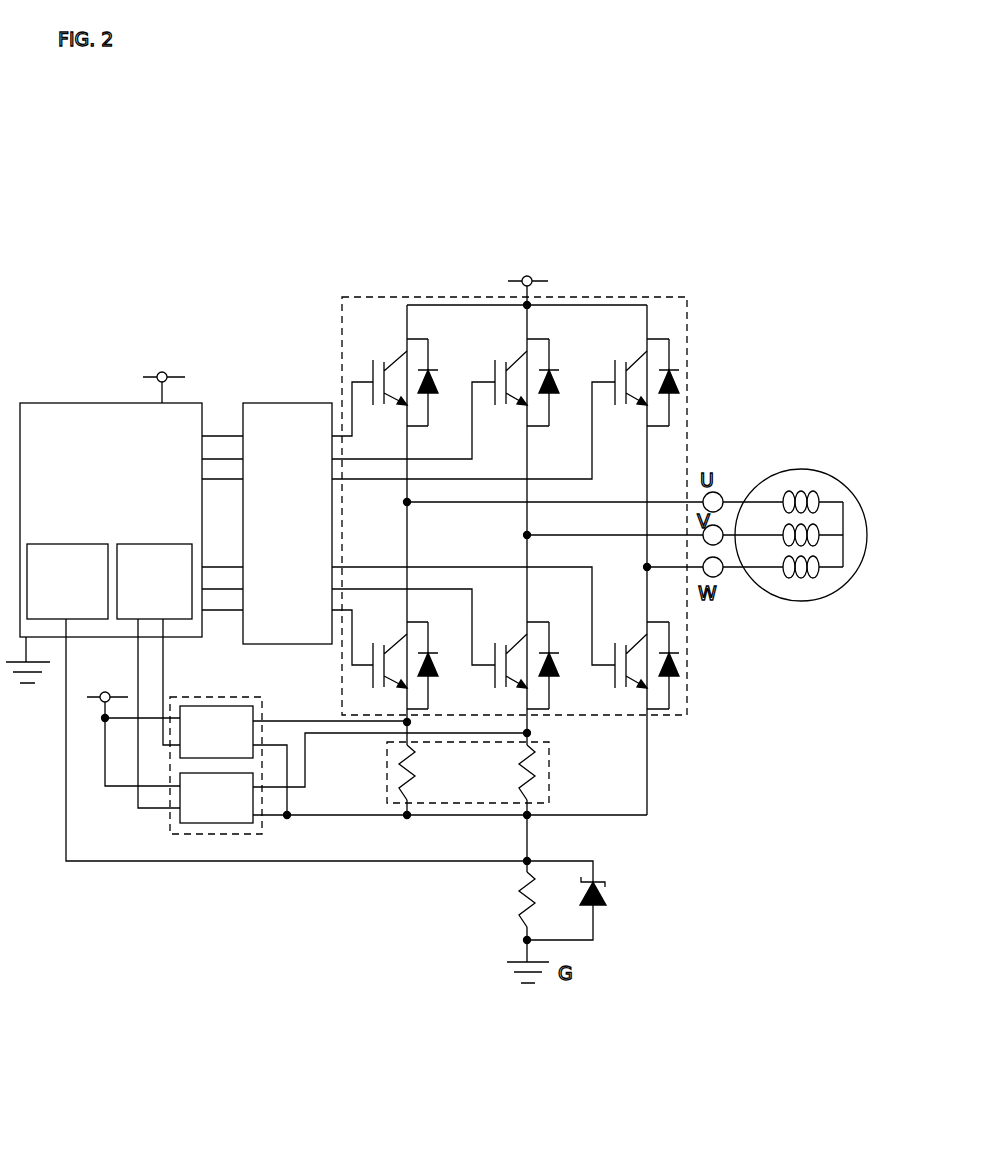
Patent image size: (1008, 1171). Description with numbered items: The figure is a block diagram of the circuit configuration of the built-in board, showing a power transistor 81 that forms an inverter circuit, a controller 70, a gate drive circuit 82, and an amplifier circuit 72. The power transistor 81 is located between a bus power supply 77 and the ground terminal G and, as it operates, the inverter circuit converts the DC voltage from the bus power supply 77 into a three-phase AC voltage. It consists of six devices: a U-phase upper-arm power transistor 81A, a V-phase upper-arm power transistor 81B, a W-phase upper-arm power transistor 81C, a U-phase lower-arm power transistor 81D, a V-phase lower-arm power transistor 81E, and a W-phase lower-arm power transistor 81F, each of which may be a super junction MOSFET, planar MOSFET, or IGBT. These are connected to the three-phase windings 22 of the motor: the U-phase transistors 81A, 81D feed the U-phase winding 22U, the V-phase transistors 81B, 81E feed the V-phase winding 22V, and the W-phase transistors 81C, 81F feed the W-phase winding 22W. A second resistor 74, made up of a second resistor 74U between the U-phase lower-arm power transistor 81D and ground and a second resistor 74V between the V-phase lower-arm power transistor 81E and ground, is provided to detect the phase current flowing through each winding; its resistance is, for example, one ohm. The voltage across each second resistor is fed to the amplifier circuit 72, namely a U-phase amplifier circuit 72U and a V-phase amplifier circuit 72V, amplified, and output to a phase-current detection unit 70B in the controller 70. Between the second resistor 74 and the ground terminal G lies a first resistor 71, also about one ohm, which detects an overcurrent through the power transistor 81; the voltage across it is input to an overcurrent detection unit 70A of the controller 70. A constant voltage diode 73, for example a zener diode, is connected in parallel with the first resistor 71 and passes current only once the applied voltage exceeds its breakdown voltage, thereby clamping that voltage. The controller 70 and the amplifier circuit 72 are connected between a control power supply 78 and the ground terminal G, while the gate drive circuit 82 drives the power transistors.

The controller 70 is at (104, 543).
The overcurrent detection unit 70A is at (67, 581).
The phase-current detection unit 70B is at (154, 581).
The gate drive circuit 82 is at (408, 523).
The power transistor 81 is at (674, 296).
The U-phase upper-arm power transistor 81A is at (400, 358).
The V-phase upper-arm power transistor 81B is at (520, 358).
The W-phase upper-arm power transistor 81C is at (640, 358).
The U-phase lower-arm power transistor 81D is at (434, 683).
The V-phase lower-arm power transistor 81E is at (562, 683).
The W-phase lower-arm power transistor 81F is at (676, 683).
The bus power supply 77 is at (537, 274).
The control power supply 78 is at (167, 369).
The amplifier circuit 72 is at (212, 696).
The U-phase amplifier circuit 72U is at (216, 732).
The V-phase amplifier circuit 72V is at (216, 798).
The second resistor 74 is at (385, 781).
The second resistor (U-phase) 74U is at (421, 767).
The second resistor (V-phase) 74V is at (541, 767).
The first resistor 71 is at (512, 905).
The constant voltage diode 73 is at (608, 905).
The windings 22 is at (824, 507).
The U-phase winding 22U is at (777, 485).
The V-phase winding 22V is at (827, 520).
The W-phase winding 22W is at (822, 555).